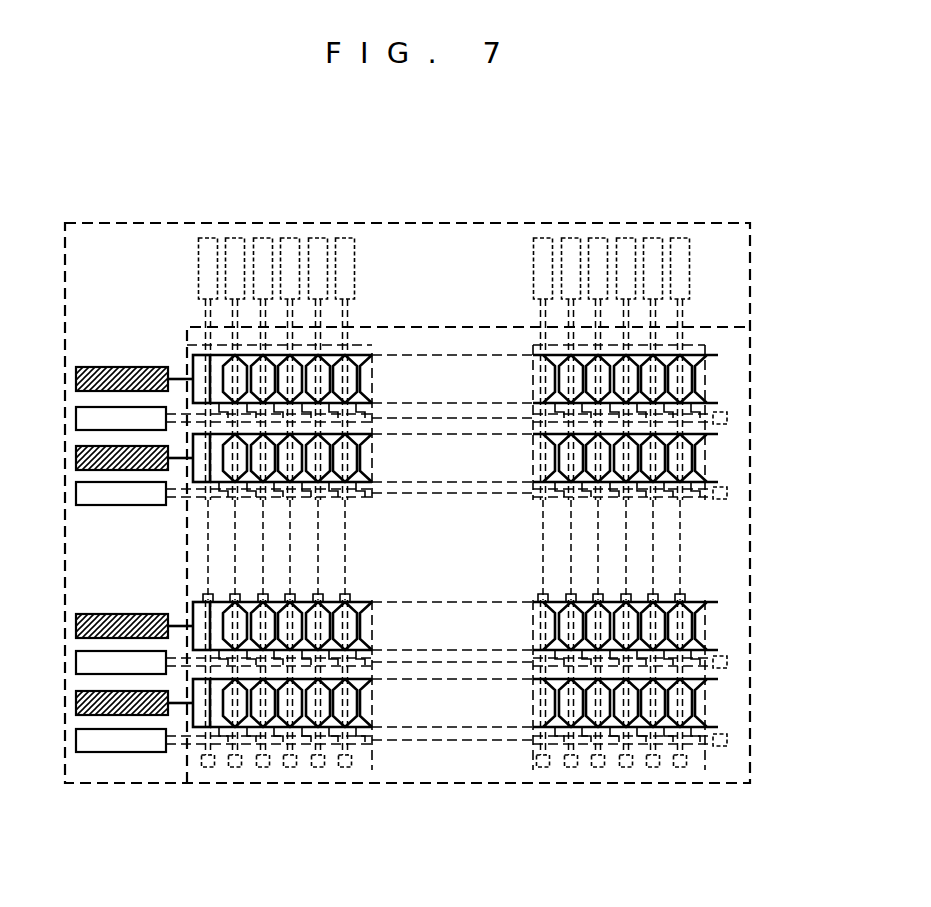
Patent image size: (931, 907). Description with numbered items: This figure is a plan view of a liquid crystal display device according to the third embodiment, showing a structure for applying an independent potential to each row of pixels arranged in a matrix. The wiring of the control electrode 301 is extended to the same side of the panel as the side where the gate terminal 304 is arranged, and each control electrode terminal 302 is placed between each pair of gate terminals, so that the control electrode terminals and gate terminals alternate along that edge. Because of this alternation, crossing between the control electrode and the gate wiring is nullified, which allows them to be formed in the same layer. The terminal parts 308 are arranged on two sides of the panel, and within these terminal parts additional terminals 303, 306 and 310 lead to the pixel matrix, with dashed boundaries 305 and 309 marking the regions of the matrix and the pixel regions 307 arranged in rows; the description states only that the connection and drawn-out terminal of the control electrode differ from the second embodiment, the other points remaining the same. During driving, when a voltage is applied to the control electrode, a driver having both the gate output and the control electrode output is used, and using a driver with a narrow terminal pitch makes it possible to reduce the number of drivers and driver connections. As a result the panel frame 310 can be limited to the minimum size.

The control electrode 301 is at (695, 452).
The control electrode terminal 302 is at (107, 366).
The lower terminal 303 is at (697, 748).
The gate terminal 304 is at (118, 754).
The block boundary line 305 is at (683, 334).
The upper terminal (left group) 306 is at (345, 235).
The pixel region (lower right block) 307 is at (700, 620).
The terminal parts 308 is at (175, 238).
The display region outline 309 is at (455, 335).
The panel frame 310 is at (649, 223).